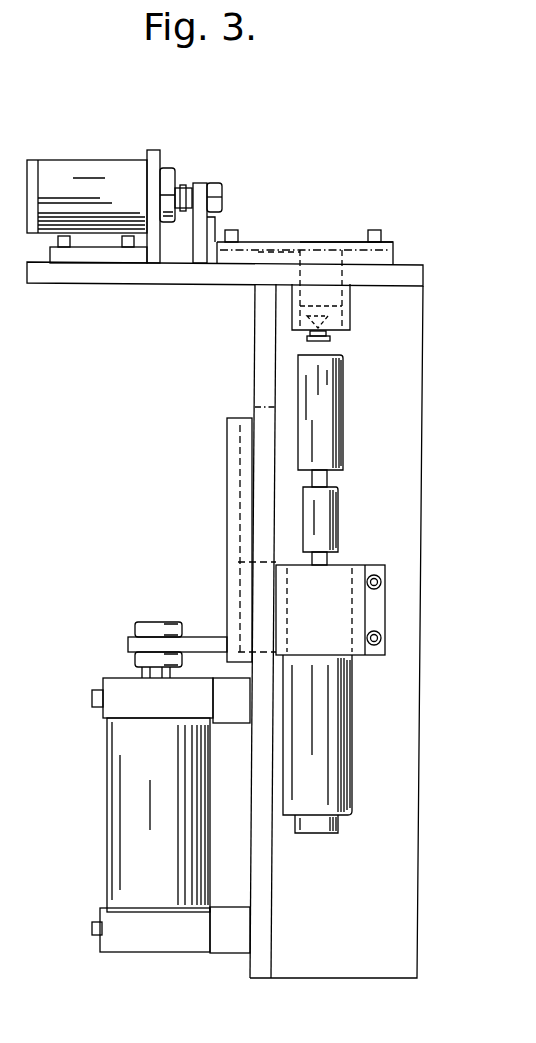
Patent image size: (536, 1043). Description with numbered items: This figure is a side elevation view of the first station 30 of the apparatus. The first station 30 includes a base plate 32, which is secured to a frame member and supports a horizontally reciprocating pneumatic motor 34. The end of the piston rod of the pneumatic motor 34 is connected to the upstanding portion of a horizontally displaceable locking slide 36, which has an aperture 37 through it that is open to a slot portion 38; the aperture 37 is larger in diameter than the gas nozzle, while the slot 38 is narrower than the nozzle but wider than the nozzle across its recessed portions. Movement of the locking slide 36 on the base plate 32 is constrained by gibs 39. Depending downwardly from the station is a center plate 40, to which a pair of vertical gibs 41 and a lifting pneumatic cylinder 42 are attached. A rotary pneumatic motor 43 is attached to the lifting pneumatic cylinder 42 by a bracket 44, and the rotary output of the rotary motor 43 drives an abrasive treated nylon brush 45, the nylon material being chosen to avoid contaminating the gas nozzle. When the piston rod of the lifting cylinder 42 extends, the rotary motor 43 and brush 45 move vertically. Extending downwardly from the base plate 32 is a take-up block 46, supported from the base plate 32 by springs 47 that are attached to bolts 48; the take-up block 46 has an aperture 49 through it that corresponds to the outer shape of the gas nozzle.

The first station 30 is at (273, 173).
The base plate 32 is at (415, 278).
The horizontally reciprocating pneumatic motor 34 is at (88, 171).
The locking slide 36 is at (208, 258).
The aperture 37 is at (308, 262).
The slot portion 38 is at (270, 240).
The gibs 39 is at (350, 243).
The center plate 40 is at (416, 466).
The vertical gibs 41 is at (228, 497).
The lifting pneumatic cylinder 42 is at (130, 823).
The rotary pneumatic motor 43 is at (341, 767).
The bracket 44 is at (373, 612).
The abrasive treated nylon brush 45 is at (344, 425).
The take-up block 46 is at (350, 318).
The springs 47 is at (308, 323).
The bolts 48 is at (330, 340).
The aperture 49 is at (295, 307).